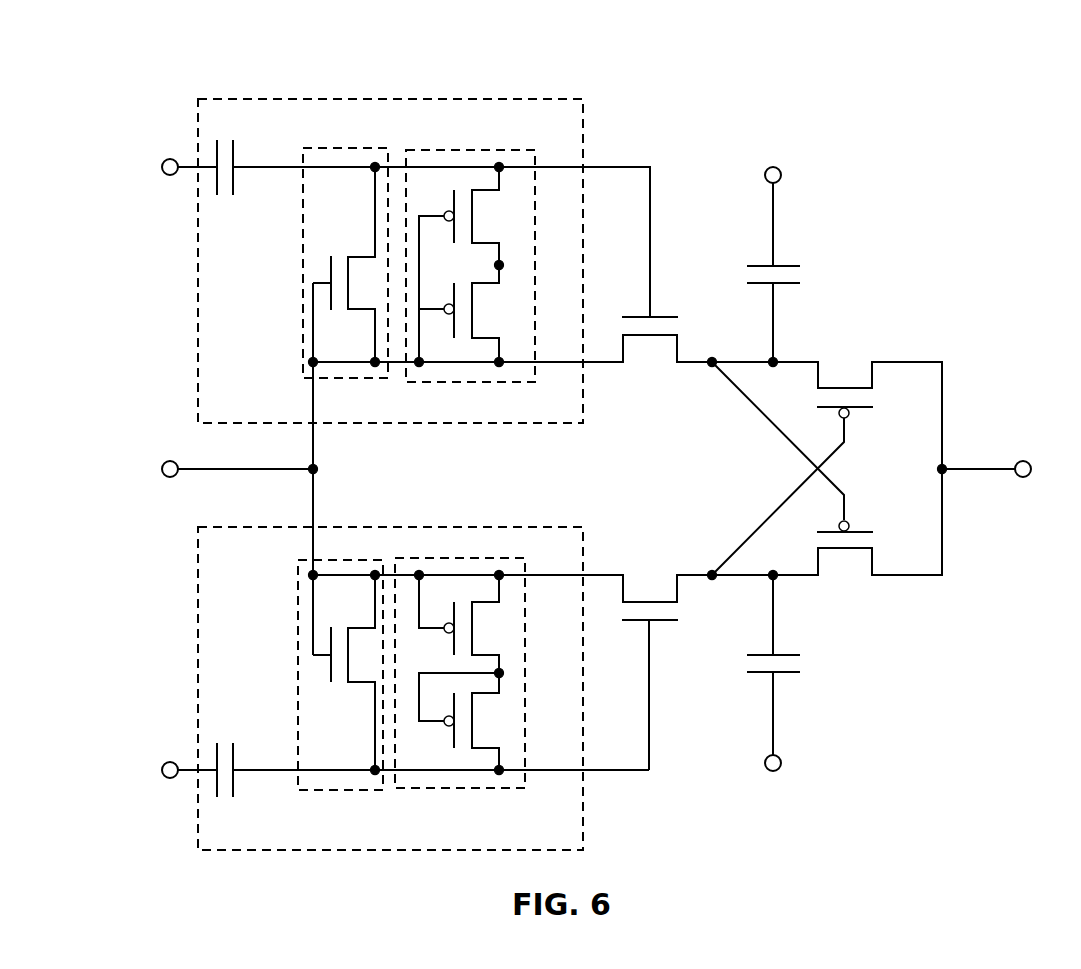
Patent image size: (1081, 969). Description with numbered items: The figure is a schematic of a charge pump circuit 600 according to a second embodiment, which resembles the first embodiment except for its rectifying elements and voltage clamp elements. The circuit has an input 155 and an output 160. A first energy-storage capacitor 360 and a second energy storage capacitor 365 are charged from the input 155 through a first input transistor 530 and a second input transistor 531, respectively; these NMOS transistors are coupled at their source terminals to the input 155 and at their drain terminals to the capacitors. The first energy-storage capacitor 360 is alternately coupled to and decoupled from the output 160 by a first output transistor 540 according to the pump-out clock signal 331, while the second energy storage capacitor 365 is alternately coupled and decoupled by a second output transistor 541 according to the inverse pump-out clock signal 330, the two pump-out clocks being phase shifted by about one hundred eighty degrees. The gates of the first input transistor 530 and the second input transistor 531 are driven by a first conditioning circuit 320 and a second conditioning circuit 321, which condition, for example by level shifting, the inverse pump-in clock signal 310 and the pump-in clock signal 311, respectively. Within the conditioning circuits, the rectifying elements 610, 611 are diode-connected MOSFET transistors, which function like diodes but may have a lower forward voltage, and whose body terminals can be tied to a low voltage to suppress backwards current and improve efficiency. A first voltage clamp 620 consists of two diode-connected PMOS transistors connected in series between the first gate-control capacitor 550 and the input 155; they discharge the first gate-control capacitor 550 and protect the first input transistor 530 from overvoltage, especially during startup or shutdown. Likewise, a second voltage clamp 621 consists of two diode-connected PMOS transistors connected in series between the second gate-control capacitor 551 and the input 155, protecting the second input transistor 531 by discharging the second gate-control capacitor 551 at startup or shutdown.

The charge pump circuit 600 is at (66, 49).
The input 155 is at (111, 453).
The output 160 is at (1008, 414).
The inverse pump-in clock signal (clk2_i) 310 is at (81, 157).
The pump-in clock signal (clk2) 311 is at (84, 753).
The first conditioning circuit 320 is at (387, 98).
The second conditioning circuit 321 is at (418, 527).
The inverse pump-out clock signal (clk1_i) 330 is at (749, 132).
The pump-out clock signal (clk1) 331 is at (749, 809).
The first energy-storage capacitor (C4) 360 is at (789, 262).
The second energy storage capacitor (C3) 365 is at (788, 678).
The first input transistor (M4) 530 is at (641, 394).
The second input transistor (M6) 531 is at (647, 536).
The first output transistor (M5) 540 is at (863, 339).
The second output transistor (M7) 541 is at (864, 602).
The first gate-control capacitor (C2) 550 is at (222, 201).
The second gate-control capacitor (C1) 551 is at (222, 734).
The rectifying element Mab 610 is at (342, 146).
The rectifying element Maa 611 is at (333, 796).
The first voltage clamp 620 is at (477, 386).
The second voltage clamp 621 is at (477, 559).